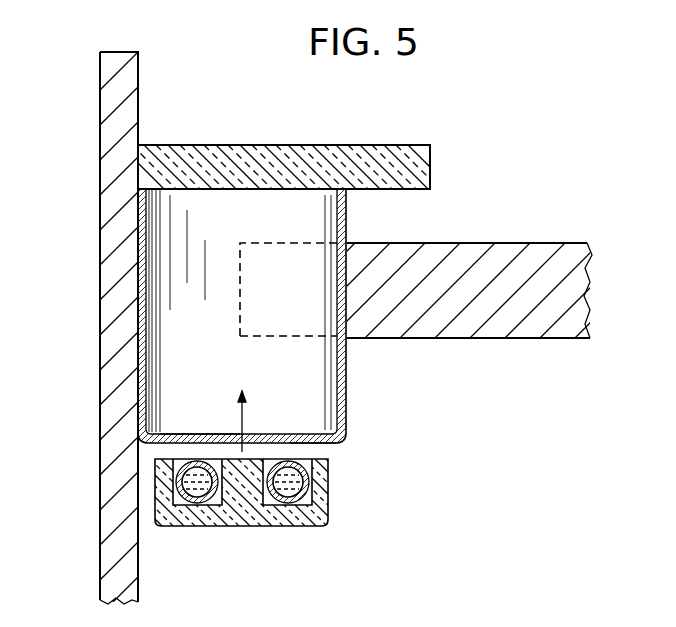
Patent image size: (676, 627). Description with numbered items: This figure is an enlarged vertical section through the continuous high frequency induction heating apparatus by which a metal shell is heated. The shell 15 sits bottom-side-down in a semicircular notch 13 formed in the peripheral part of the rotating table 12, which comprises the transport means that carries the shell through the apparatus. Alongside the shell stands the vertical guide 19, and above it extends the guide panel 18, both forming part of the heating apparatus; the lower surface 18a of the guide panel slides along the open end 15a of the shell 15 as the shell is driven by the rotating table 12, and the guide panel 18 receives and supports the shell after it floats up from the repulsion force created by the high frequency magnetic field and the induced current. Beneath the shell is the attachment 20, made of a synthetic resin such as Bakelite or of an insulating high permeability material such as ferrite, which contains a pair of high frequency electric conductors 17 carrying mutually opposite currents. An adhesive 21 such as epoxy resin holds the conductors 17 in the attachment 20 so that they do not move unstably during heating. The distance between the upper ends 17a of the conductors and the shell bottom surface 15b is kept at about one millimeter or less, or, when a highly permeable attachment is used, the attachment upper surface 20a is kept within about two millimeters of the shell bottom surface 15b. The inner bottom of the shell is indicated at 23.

The vertical guide 19 is at (110, 101).
The guide panel 18 is at (404, 146).
The lower surface of guide panel 18a is at (268, 190).
The rotating table 12 is at (527, 320).
The shell 15 is at (348, 397).
The open end of shell 15a is at (345, 183).
The shell bottom surface 15b is at (305, 446).
The semicircular notch 13 is at (347, 296).
The bottom wall of housing 23 is at (212, 441).
The attachment 20 is at (247, 513).
The attachment upper surface 20a is at (252, 458).
The high frequency electric conductor 17 is at (185, 486).
The upper ends of the conductors 17a is at (200, 460).
The adhesive 21 is at (178, 504).